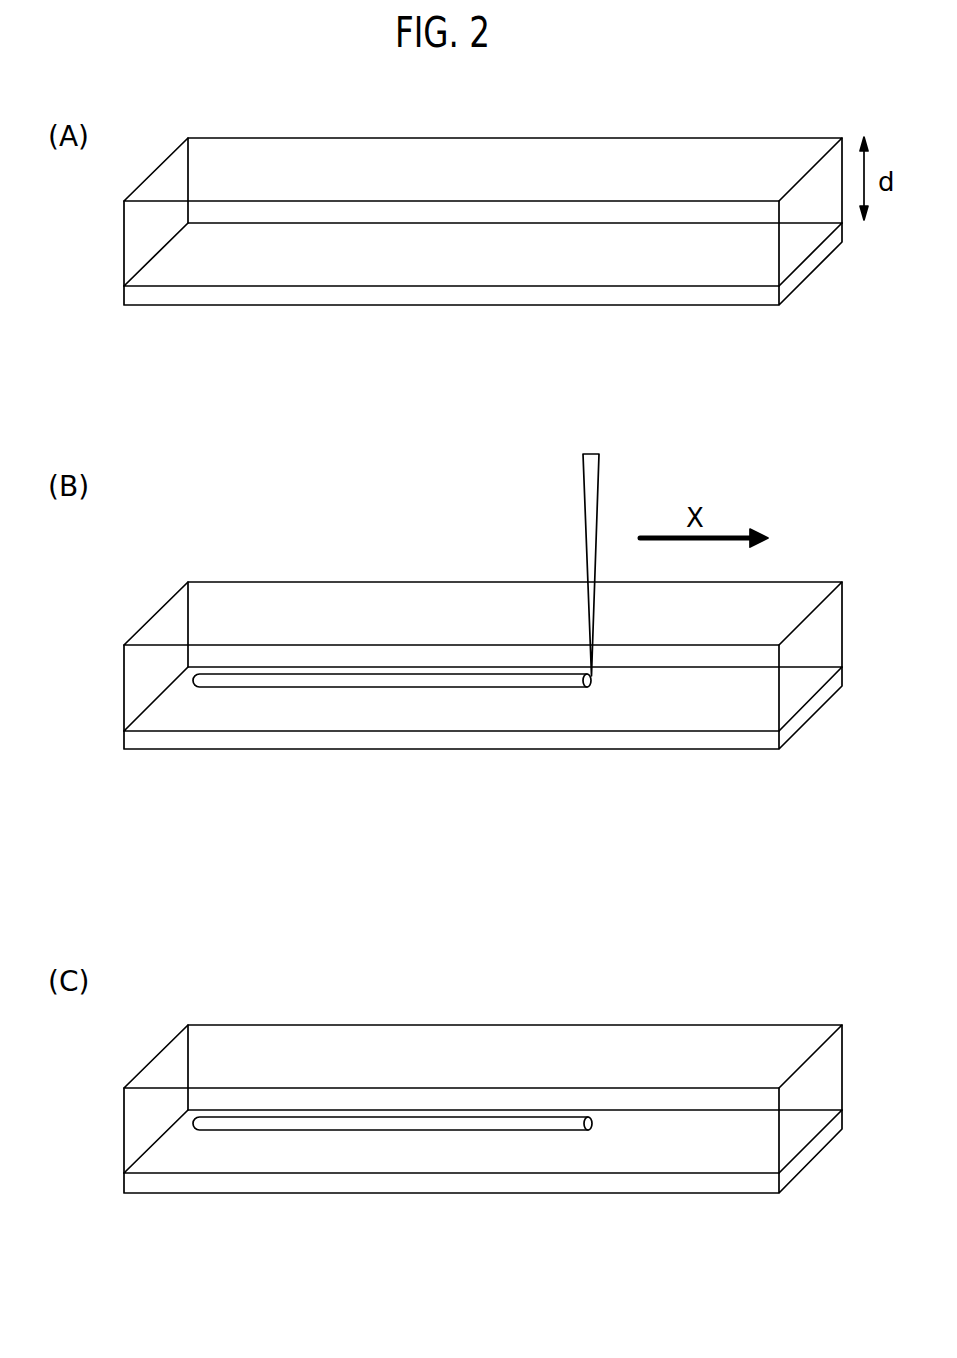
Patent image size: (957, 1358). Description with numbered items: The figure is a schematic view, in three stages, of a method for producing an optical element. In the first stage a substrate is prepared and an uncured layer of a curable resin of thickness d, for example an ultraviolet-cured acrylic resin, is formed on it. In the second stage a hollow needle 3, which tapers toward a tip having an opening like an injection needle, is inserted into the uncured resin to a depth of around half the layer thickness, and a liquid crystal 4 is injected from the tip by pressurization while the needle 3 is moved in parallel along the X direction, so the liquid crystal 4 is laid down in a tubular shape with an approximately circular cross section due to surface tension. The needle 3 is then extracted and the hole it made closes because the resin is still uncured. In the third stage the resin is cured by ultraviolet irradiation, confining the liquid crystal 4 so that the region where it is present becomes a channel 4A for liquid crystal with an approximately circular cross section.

The needle 3 is at (591, 537).
The liquid crystal 4 is at (353, 678).
The channel 4A is at (354, 1122).